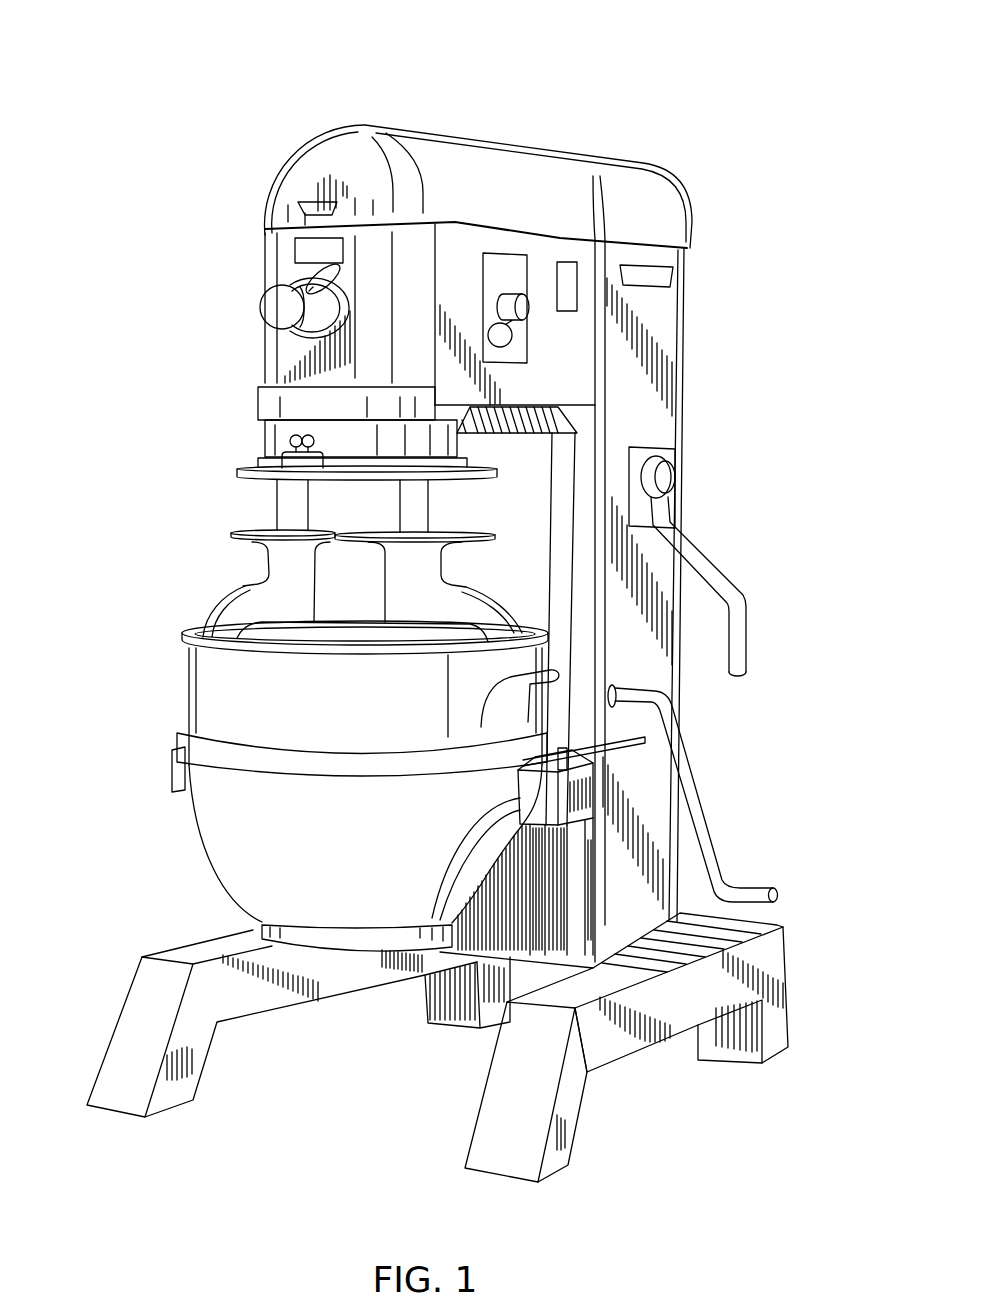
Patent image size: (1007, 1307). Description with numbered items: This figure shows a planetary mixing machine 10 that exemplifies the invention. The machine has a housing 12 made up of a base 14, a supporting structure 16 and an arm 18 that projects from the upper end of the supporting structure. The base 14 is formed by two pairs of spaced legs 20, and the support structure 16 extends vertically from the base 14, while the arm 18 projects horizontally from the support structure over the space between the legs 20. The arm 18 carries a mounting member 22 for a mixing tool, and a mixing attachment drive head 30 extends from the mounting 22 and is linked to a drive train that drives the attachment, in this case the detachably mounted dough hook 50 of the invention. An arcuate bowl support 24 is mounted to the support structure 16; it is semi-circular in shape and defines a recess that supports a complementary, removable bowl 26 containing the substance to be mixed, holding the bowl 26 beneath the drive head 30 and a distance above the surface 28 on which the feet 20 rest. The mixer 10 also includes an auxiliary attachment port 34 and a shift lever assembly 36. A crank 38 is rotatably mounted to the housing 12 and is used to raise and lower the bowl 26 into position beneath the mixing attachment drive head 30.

The mixing machine 10 is at (655, 130).
The housing 12 is at (653, 209).
The base 14 is at (680, 1017).
The supporting structure 16 is at (673, 629).
The arm 18 is at (270, 357).
The legs 20 is at (568, 1107).
The mounting member 22 is at (477, 478).
The bowl support 24 is at (528, 797).
The bowl 26 is at (197, 667).
The surface 28 is at (365, 1130).
The mixing attachment drive head 30 is at (270, 523).
The auxiliary attachment port 34 is at (262, 302).
The shift lever assembly 36 is at (739, 621).
The crank 38 is at (698, 798).
The dough hook 50 is at (192, 598).